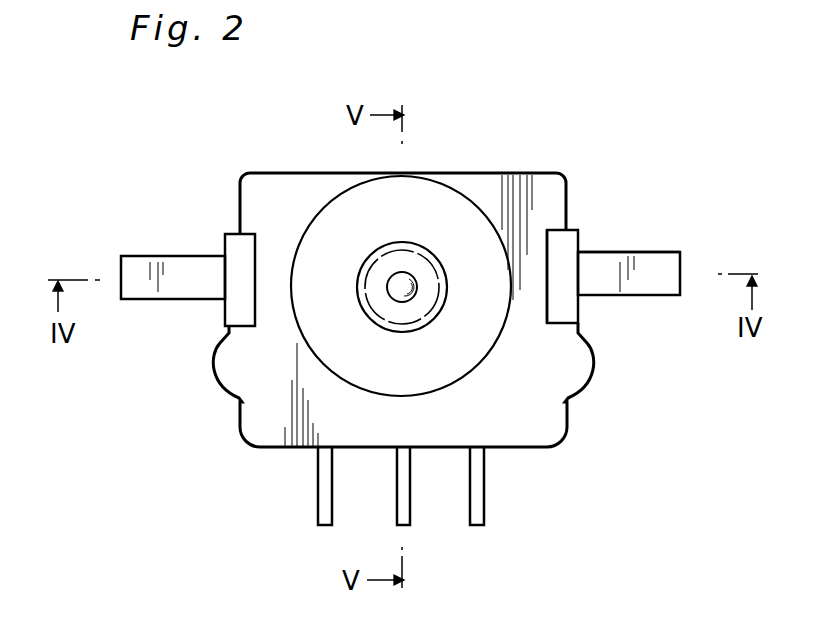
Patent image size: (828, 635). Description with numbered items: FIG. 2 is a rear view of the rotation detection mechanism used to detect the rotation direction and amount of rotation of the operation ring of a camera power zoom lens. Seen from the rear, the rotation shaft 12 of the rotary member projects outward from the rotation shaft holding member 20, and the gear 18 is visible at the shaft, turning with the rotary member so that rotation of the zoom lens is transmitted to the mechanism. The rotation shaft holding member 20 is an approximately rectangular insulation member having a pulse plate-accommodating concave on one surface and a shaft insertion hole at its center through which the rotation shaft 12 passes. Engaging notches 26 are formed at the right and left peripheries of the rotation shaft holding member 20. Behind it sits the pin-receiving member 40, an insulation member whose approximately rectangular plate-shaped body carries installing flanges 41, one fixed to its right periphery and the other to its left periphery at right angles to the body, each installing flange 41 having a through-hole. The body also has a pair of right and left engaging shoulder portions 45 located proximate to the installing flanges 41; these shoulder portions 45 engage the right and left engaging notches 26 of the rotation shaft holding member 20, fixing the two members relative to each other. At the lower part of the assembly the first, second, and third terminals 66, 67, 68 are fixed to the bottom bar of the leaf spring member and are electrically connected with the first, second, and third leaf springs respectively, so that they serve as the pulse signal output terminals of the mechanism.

The rotation shaft 12 is at (412, 293).
The gear 18 is at (420, 243).
The rotation shaft holding member 20 is at (568, 183).
The engaging notches 26 is at (548, 287).
The pin-receiving member 40 is at (657, 297).
The installing flanges 41 is at (650, 251).
The engaging shoulder portions 45 is at (568, 241).
The first terminal 66 is at (484, 503).
The second terminal 67 is at (397, 510).
The third terminal 68 is at (318, 518).